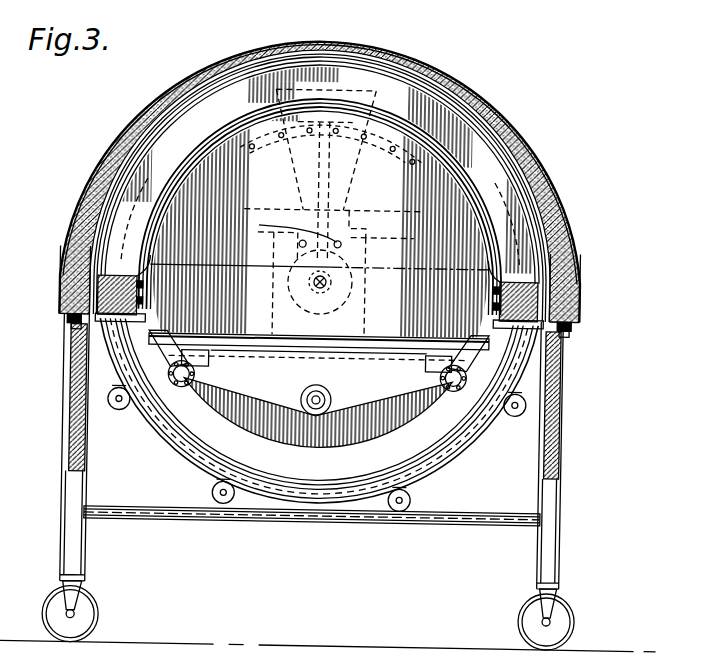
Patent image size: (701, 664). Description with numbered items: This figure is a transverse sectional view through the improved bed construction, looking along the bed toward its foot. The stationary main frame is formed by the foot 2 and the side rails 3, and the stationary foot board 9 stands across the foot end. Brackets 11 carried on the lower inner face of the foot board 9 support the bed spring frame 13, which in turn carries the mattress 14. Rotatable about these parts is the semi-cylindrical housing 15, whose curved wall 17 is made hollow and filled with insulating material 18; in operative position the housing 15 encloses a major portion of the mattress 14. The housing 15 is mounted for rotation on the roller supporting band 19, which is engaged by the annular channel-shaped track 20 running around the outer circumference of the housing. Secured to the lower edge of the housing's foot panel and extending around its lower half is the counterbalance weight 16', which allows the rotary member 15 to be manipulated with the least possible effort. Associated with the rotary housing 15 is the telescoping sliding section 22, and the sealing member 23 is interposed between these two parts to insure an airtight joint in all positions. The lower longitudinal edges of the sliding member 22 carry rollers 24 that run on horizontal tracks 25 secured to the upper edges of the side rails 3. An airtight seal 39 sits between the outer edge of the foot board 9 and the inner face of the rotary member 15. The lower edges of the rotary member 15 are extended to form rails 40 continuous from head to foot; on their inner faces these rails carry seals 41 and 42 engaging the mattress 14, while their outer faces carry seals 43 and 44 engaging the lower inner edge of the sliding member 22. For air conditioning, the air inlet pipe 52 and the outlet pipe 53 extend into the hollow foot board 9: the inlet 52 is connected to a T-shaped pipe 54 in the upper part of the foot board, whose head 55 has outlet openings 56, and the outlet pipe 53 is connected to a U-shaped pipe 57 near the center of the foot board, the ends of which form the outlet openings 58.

The foot 2 is at (520, 452).
The side rails 3 is at (72, 410).
The stationary foot board 9 is at (346, 150).
The brackets 11 is at (208, 363).
The bed spring frame 13 is at (358, 346).
The mattress 14 is at (321, 273).
The semi-cylindrical housing 15 is at (400, 92).
The counterbalance weight 16' is at (317, 403).
The curved wall 17 is at (497, 183).
The insulating material 18 is at (548, 216).
The roller supporting band 19 is at (420, 496).
The annular channel-shaped track 20 is at (270, 483).
The telescoping sliding section 22 is at (578, 218).
The sealing member 23 is at (497, 103).
The rollers 24 is at (70, 318).
The horizontal tracks 25 is at (74, 328).
The airtight seal 39 is at (466, 173).
The rails 40 is at (150, 258).
The seal 41 is at (145, 295).
The seal 42 is at (492, 305).
The seal 43 is at (62, 282).
The seal 44 is at (574, 290).
The air inlet pipe 52 is at (296, 280).
The air outlet pipe 53 is at (300, 294).
The T-shaped pipe 54 is at (292, 168).
The head of the T-shaped pipe 55 is at (398, 152).
The outlet openings 56 is at (257, 143).
The U-shaped pipe 57 is at (290, 258).
The outlet openings 58 is at (322, 272).